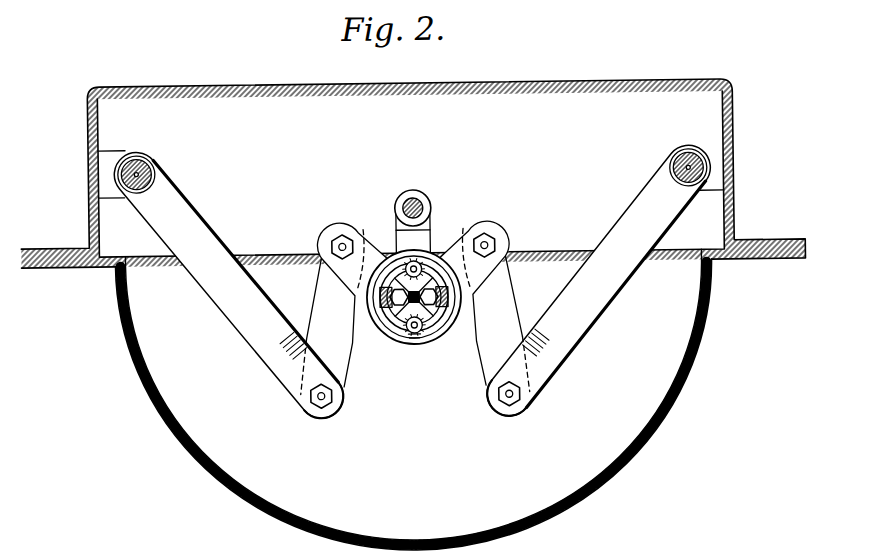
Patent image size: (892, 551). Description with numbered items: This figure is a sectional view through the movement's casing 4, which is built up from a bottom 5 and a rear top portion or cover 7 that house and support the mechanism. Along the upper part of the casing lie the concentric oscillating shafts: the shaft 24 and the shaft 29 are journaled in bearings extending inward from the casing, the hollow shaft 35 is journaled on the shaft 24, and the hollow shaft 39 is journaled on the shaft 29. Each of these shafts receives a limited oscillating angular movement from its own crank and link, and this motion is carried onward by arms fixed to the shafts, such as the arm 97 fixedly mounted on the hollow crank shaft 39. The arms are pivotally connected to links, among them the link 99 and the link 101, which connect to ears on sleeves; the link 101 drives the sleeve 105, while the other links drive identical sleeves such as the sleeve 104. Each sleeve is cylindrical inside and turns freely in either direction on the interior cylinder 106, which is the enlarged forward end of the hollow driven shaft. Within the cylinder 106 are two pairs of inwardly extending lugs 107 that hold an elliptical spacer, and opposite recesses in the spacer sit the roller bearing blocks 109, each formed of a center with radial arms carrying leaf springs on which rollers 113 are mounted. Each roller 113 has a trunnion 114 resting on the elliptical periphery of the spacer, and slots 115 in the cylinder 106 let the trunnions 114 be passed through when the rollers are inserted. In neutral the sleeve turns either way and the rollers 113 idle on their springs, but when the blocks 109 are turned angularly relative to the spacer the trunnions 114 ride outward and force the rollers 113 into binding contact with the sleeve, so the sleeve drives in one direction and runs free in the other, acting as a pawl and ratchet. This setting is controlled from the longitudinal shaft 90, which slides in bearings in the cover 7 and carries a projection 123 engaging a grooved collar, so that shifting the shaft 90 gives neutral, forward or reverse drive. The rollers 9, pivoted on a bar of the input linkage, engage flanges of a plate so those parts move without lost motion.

The casing 4 is at (658, 428).
The bottom 5 is at (480, 533).
The rear top portion 7 is at (580, 97).
The rollers 9 is at (218, 251).
The shaft 24 is at (128, 172).
The shaft 29 is at (710, 164).
The hollow shaft 35 is at (162, 165).
The hollow shaft 39 is at (700, 149).
The longitudinal shaft 90 is at (424, 202).
The arm 97 is at (622, 233).
The link 99 is at (336, 357).
The link 101 is at (508, 327).
The sleeve 104 is at (396, 224).
The sleeve 105 is at (424, 341).
The interior cylinder 106 is at (456, 297).
The inwardly extending lugs 107 is at (380, 303).
The roller bearing blocks 109 is at (382, 326).
The rollers 113 is at (420, 262).
The trunnion 114 is at (424, 328).
The slots 115 is at (432, 210).
The projection 123 is at (392, 200).